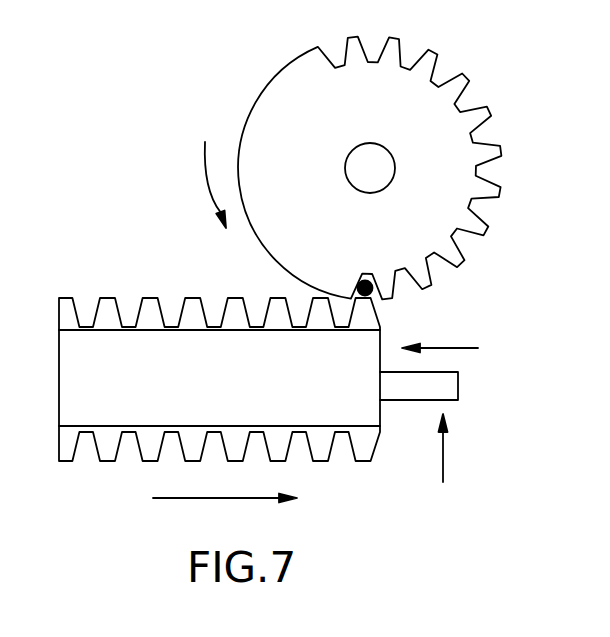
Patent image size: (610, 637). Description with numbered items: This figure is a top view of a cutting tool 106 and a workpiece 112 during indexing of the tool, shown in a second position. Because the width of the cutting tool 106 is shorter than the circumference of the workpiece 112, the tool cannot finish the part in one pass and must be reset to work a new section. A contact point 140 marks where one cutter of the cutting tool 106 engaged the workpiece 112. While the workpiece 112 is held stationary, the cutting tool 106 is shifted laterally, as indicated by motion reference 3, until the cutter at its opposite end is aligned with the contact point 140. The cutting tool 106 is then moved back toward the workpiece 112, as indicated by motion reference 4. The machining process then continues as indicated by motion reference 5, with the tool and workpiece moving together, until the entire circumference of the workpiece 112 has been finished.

The cutting tool 106 is at (107, 298).
The workpiece 112 is at (452, 173).
The contact point 140 is at (366, 279).
The motion reference 3 is at (440, 337).
The motion reference 4 is at (456, 448).
The motion reference 5 is at (225, 335).